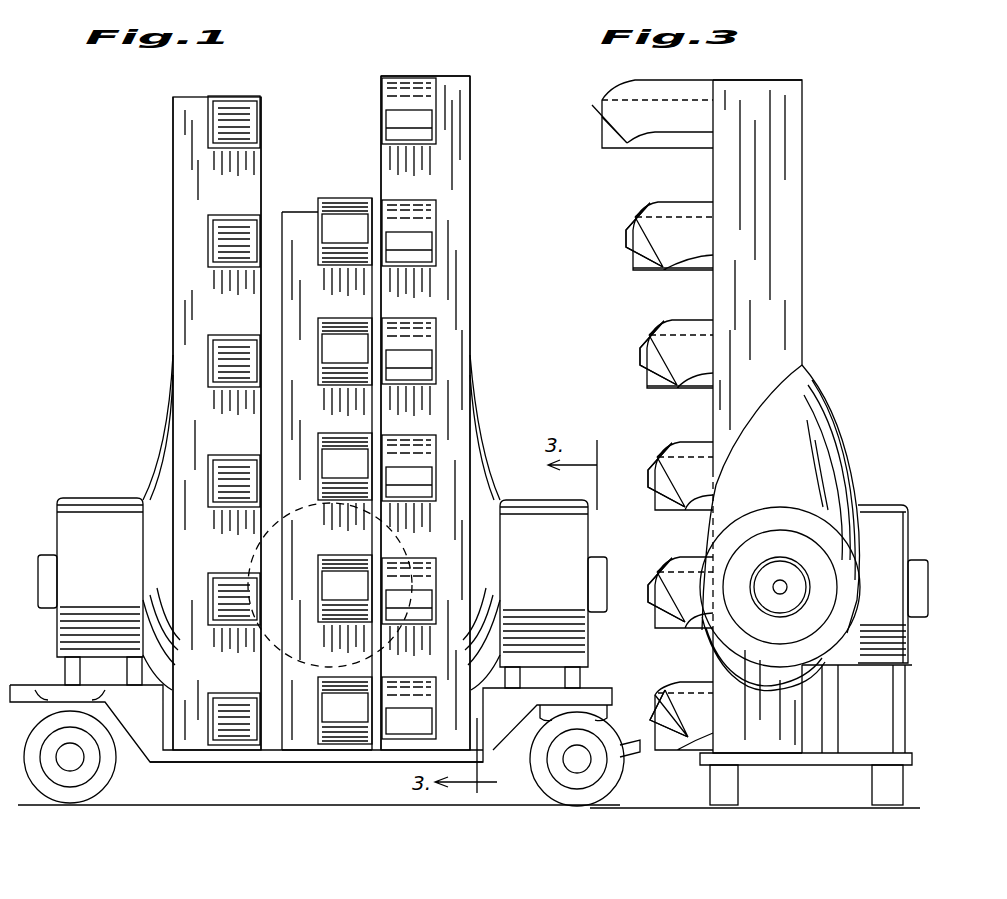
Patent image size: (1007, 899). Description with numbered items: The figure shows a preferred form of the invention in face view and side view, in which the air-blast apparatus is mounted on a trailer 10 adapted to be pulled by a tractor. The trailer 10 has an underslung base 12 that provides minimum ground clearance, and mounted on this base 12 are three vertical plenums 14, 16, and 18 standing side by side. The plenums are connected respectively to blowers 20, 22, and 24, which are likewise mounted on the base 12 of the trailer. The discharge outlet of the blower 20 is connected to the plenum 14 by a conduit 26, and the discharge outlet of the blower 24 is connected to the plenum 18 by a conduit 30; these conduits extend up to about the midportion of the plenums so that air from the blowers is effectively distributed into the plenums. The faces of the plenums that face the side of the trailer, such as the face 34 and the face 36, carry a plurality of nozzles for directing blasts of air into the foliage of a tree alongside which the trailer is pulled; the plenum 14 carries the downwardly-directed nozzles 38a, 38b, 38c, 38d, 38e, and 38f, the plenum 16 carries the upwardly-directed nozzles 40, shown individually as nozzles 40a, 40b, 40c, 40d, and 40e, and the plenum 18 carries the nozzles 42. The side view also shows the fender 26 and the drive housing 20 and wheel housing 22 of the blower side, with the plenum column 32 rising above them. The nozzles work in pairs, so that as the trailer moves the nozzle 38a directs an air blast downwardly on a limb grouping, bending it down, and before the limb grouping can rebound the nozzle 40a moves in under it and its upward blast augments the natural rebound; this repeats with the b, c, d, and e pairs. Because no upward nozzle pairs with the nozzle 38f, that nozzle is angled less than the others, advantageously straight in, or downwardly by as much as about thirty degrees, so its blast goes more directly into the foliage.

In FIG. 1, the trailer 10 is at (171, 790).
In FIG. 3, the trailer 10 is at (756, 832).
In FIG. 1, the underslung base 12 is at (257, 764).
In FIG. 3, the underslung base 12 is at (822, 760).
In FIG. 1, the vertical plenum 14 is at (456, 62).
In FIG. 3, the vertical plenum 14 is at (803, 66).
In FIG. 1, the vertical plenum 16 is at (328, 106).
In FIG. 1, the vertical plenum 18 is at (146, 135).
In FIG. 1, the blower 20 is at (555, 552).
In FIG. 3, the blower 20 is at (798, 505).
In FIG. 1, the blower 22 is at (305, 510).
In FIG. 3, the blower 22 is at (887, 505).
In FIG. 1, the blower 24 is at (110, 566).
In FIG. 1, the conduit 26 is at (495, 472).
In FIG. 3, the conduit 26 is at (810, 430).
In FIG. 1, the conduit 30 is at (158, 452).
In FIG. 1, the mast column 32 is at (460, 190).
In FIG. 3, the mast column 32 is at (790, 157).
In FIG. 1, the face 34 is at (300, 215).
In FIG. 1, the face 36 is at (178, 190).
In FIG. 1, the nozzle 38a is at (437, 115).
In FIG. 3, the nozzle 38a is at (698, 78).
In FIG. 1, the nozzle 38b is at (437, 226).
In FIG. 3, the nozzle 38b is at (695, 200).
In FIG. 1, the nozzle 38c is at (425, 342).
In FIG. 3, the nozzle 38c is at (698, 310).
In FIG. 1, the nozzle 38d is at (425, 447).
In FIG. 3, the nozzle 38d is at (702, 440).
In FIG. 1, the nozzle 38e is at (430, 578).
In FIG. 3, the nozzle 38e is at (695, 557).
In FIG. 1, the nozzle 38f is at (400, 735).
In FIG. 3, the nozzle 38f is at (704, 678).
In FIG. 3, the nozzle 40 is at (633, 269).
In FIG. 1, the nozzle 40a is at (345, 198).
In FIG. 3, the nozzle 40a is at (624, 248).
In FIG. 1, the nozzle 40b is at (350, 310).
In FIG. 3, the nozzle 40b is at (640, 362).
In FIG. 1, the nozzle 40c is at (343, 435).
In FIG. 3, the nozzle 40c is at (656, 486).
In FIG. 1, the nozzle 40d is at (348, 558).
In FIG. 3, the nozzle 40d is at (652, 612).
In FIG. 1, the nozzle 40e is at (318, 742).
In FIG. 3, the nozzle 40e is at (670, 735).
In FIG. 1, the nozzle 42 is at (212, 108).
In FIG. 3, the nozzle 42 is at (600, 143).